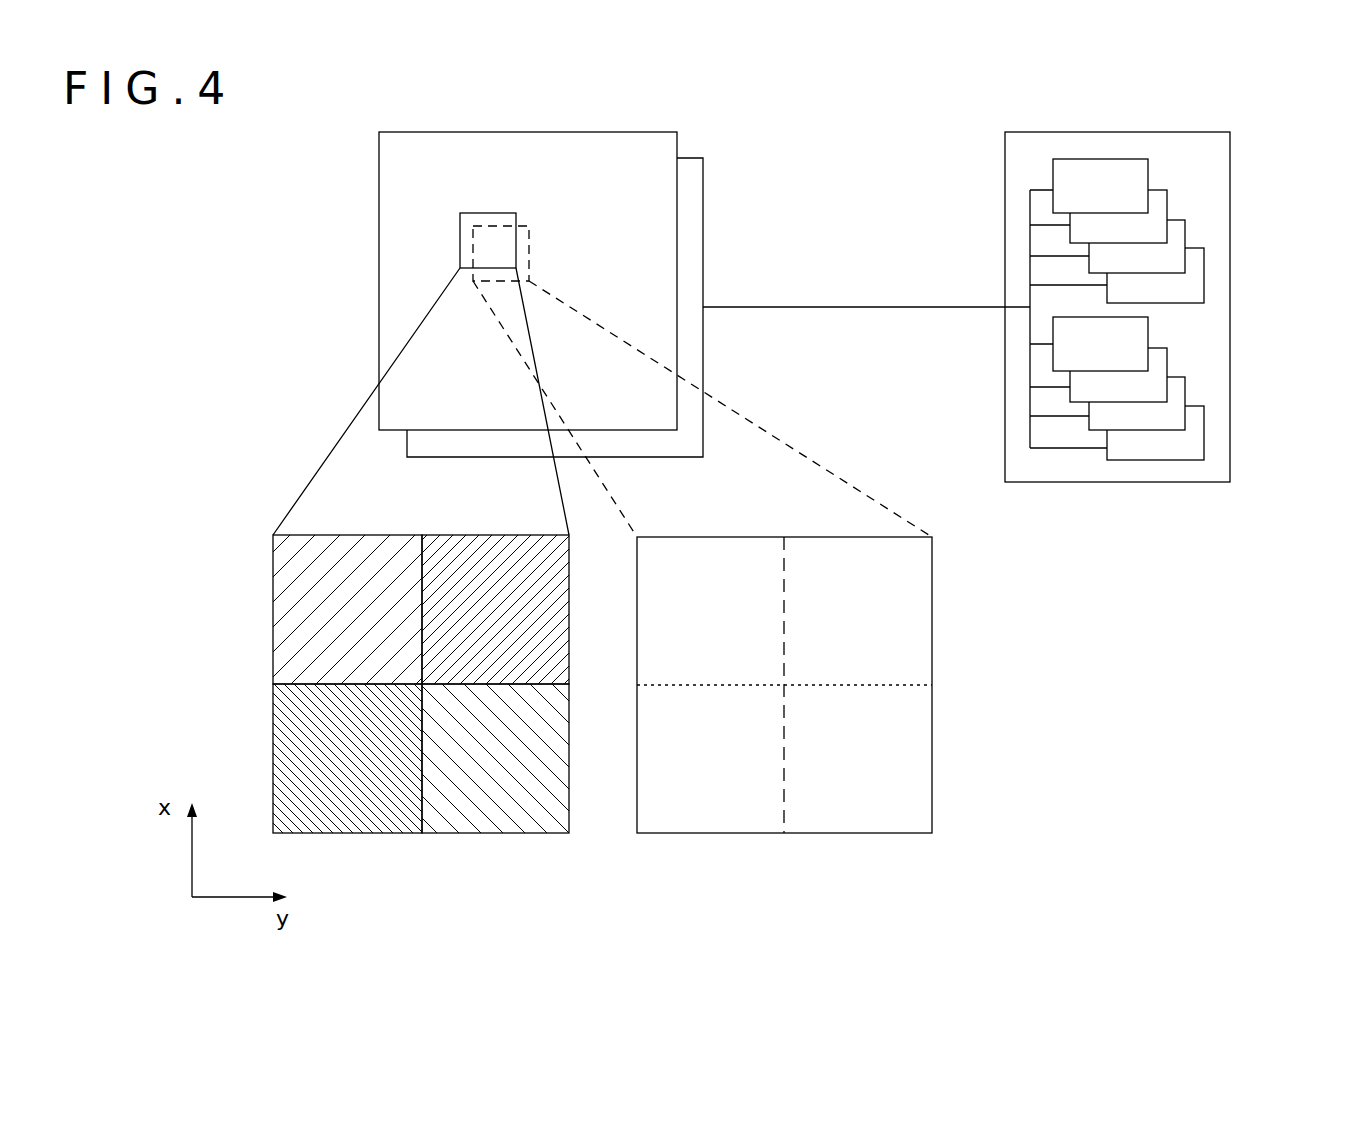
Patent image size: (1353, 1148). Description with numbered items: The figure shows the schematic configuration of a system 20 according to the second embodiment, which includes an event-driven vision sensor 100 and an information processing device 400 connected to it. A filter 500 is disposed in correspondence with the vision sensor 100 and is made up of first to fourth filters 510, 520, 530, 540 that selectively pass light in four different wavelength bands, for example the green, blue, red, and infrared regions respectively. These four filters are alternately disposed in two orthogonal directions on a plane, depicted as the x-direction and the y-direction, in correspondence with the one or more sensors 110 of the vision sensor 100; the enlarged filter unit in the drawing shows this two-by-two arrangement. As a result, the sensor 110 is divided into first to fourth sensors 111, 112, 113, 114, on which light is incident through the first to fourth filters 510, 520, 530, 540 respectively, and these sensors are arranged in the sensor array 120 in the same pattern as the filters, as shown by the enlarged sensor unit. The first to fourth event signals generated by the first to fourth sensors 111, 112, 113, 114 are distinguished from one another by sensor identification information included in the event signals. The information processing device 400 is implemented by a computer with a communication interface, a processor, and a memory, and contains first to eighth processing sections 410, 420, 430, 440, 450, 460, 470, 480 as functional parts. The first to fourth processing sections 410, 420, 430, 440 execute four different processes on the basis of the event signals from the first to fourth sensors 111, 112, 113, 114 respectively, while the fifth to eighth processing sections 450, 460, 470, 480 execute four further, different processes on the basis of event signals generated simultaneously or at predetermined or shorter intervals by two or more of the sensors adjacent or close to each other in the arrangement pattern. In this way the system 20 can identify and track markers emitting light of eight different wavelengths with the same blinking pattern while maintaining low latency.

The system 20 is at (889, 164).
The vision sensor 100 is at (609, 307).
The sensor 110 is at (871, 685).
The first sensor 111 is at (768, 590).
The second sensor 112 is at (916, 653).
The third sensor 113 is at (768, 718).
The fourth sensor 114 is at (903, 759).
The sensor array 120 is at (701, 278).
The information processing device 400 is at (1174, 303).
The first processing section 410 is at (1148, 175).
The second processing section 420 is at (1167, 207).
The third processing section 430 is at (1185, 235).
The fourth processing section 440 is at (1204, 263).
The fifth processing section 450 is at (1148, 333).
The sixth processing section 460 is at (1167, 365).
The seventh processing section 470 is at (1185, 393).
The eighth processing section 480 is at (1204, 420).
The filter 500 is at (379, 225).
The first filter 510 is at (375, 652).
The second filter 520 is at (522, 652).
The third filter 530 is at (375, 797).
The fourth filter 540 is at (522, 797).